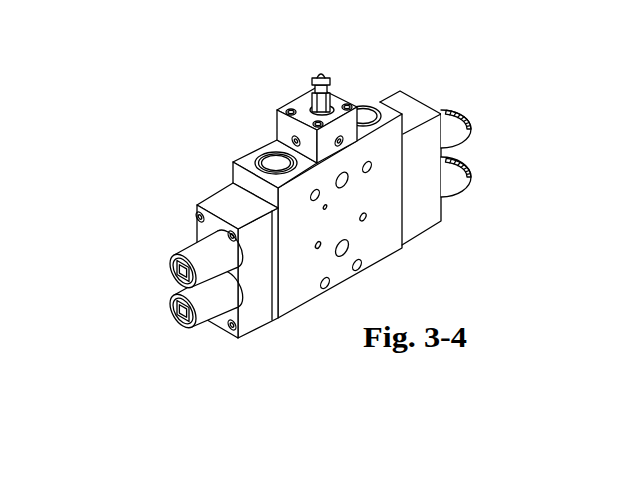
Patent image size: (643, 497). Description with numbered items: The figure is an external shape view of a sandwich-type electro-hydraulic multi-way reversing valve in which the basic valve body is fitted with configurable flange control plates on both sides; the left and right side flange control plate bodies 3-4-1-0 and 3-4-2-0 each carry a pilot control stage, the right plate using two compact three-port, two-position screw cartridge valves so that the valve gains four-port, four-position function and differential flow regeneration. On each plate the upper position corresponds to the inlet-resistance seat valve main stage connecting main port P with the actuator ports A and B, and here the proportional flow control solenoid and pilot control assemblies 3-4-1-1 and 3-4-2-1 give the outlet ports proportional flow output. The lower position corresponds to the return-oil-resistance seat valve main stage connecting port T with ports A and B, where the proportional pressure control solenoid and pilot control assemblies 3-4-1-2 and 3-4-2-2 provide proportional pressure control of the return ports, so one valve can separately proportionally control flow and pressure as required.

The first valve block 3-4-1-0 is at (218, 205).
The proportional flow control solenoid and pilot control assembly 3-4-1-1 is at (204, 257).
The proportional pressure control solenoid and pilot control assembly 3-4-1-2 is at (172, 308).
The second valve block 3-4-2-0 is at (418, 105).
The proportional flow control solenoid and pilot control assembly 3-4-2-1 is at (453, 134).
The proportional pressure control solenoid and pilot control assembly 3-4-2-2 is at (453, 187).